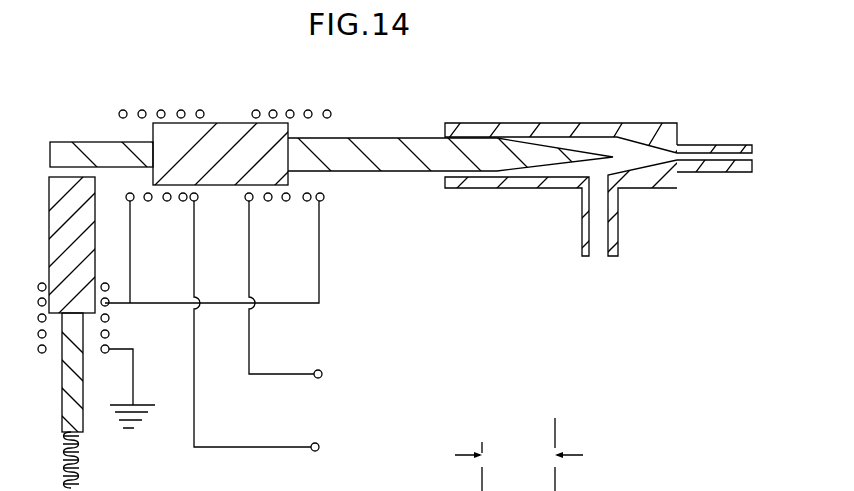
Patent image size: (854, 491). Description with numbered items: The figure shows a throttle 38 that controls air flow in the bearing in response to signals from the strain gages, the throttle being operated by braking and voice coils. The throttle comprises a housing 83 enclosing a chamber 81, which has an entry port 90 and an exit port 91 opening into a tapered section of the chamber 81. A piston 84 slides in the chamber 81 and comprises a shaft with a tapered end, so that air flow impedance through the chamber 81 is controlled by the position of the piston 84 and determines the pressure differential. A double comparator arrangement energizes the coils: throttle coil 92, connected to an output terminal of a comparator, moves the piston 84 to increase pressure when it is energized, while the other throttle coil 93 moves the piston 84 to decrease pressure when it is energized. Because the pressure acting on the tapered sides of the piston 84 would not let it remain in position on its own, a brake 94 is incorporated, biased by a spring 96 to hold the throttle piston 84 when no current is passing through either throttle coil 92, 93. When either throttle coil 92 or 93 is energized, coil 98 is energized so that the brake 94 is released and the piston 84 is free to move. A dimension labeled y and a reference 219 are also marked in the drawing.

The spray head assembly 38 is at (378, 81).
The chamber 81 is at (586, 143).
The housing 83 is at (653, 130).
The piston 84 is at (377, 171).
The entry port 90 is at (597, 258).
The exit port 91 is at (754, 157).
The throttle coil 92 is at (161, 109).
The throttle coil 93 is at (289, 205).
The brake 94 is at (65, 195).
The spring 96 is at (80, 466).
The coil 98 is at (111, 338).
The reference position 219 is at (599, 490).